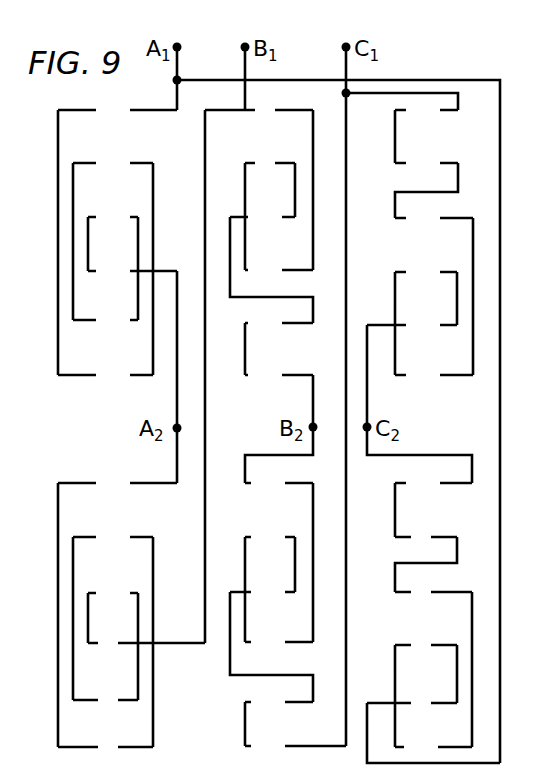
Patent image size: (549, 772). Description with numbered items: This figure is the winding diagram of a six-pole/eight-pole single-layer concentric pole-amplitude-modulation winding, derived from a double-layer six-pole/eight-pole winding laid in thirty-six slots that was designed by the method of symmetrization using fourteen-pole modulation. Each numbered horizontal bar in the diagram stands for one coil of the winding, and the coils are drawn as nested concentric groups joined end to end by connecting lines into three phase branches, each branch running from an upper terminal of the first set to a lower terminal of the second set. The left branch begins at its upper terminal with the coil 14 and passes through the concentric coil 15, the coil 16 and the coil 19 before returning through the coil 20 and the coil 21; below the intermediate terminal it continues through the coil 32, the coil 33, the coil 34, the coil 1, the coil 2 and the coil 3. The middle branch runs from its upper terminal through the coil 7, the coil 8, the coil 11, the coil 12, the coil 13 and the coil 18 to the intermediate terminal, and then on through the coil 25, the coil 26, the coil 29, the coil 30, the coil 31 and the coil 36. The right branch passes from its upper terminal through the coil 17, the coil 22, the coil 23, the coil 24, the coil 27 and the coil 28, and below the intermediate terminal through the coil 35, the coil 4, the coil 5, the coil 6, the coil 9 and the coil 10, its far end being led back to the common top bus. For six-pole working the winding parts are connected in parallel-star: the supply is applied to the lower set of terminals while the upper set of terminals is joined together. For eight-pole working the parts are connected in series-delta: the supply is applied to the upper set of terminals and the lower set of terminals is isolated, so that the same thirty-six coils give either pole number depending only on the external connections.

The coil 1 is at (146, 643).
The coil 2 is at (105, 700).
The coil 3 is at (105, 747).
The coil 4 is at (426, 537).
The coil 5 is at (433, 592).
The coil 6 is at (426, 645).
The coil 7 is at (259, 110).
The coil 8 is at (270, 163).
The coil 9 is at (412, 703).
The coil 10 is at (433, 747).
The coil 11 is at (262, 217).
The coil 12 is at (279, 270).
The coil 13 is at (279, 323).
The coil 14 is at (117, 110).
The coil 15 is at (113, 163).
The coil 16 is at (113, 217).
The coil 17 is at (426, 110).
The coil 18 is at (279, 375).
The coil 19 is at (132, 271).
The coil 20 is at (105, 320).
The coil 21 is at (105, 375).
The coil 22 is at (426, 163).
The coil 23 is at (434, 218).
The coil 24 is at (426, 272).
The coil 25 is at (279, 483).
The coil 26 is at (270, 537).
The coil 27 is at (412, 325).
The coil 28 is at (434, 375).
The coil 29 is at (262, 592).
The coil 30 is at (279, 642).
The coil 31 is at (279, 702).
The coil 32 is at (117, 483).
The coil 33 is at (113, 537).
The coil 34 is at (113, 593).
The coil 35 is at (433, 483).
The coil 36 is at (295, 746).